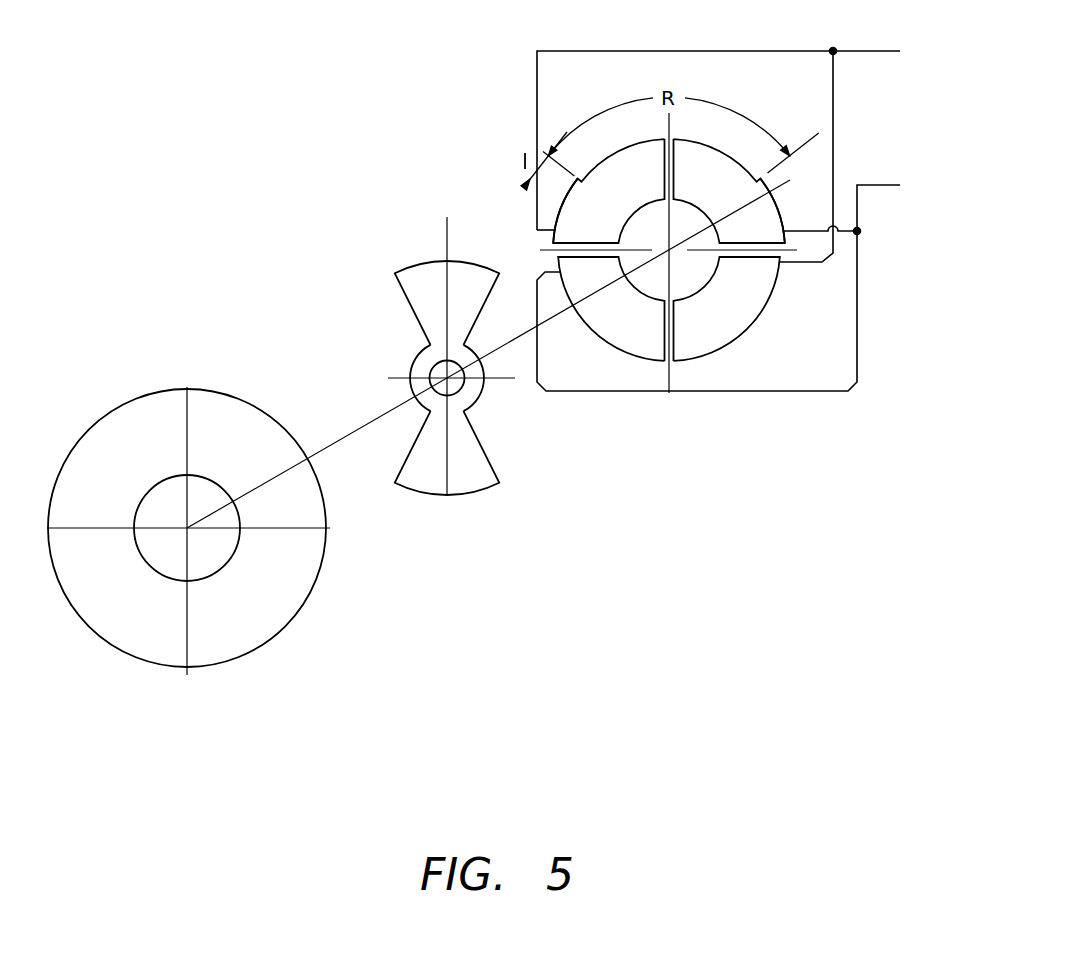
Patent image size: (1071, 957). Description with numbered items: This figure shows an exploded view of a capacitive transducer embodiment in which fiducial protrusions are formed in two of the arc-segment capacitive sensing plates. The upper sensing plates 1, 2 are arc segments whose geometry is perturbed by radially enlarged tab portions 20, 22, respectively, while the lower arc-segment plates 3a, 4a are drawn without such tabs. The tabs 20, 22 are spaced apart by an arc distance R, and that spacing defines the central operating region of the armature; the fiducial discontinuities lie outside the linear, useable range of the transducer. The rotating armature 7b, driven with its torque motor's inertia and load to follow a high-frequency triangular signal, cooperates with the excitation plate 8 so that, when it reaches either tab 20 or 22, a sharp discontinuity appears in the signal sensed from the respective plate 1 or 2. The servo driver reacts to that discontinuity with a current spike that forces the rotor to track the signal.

The stator pole 1 is at (626, 199).
The stator pole 2 is at (729, 199).
The stator pole 3a is at (748, 320).
The stator pole 4a is at (643, 325).
The rotor 7b is at (397, 285).
The wheel 8 is at (290, 622).
The radially enlarged tab portion 20 is at (562, 205).
The radially enlarged tab portion 22 is at (775, 190).